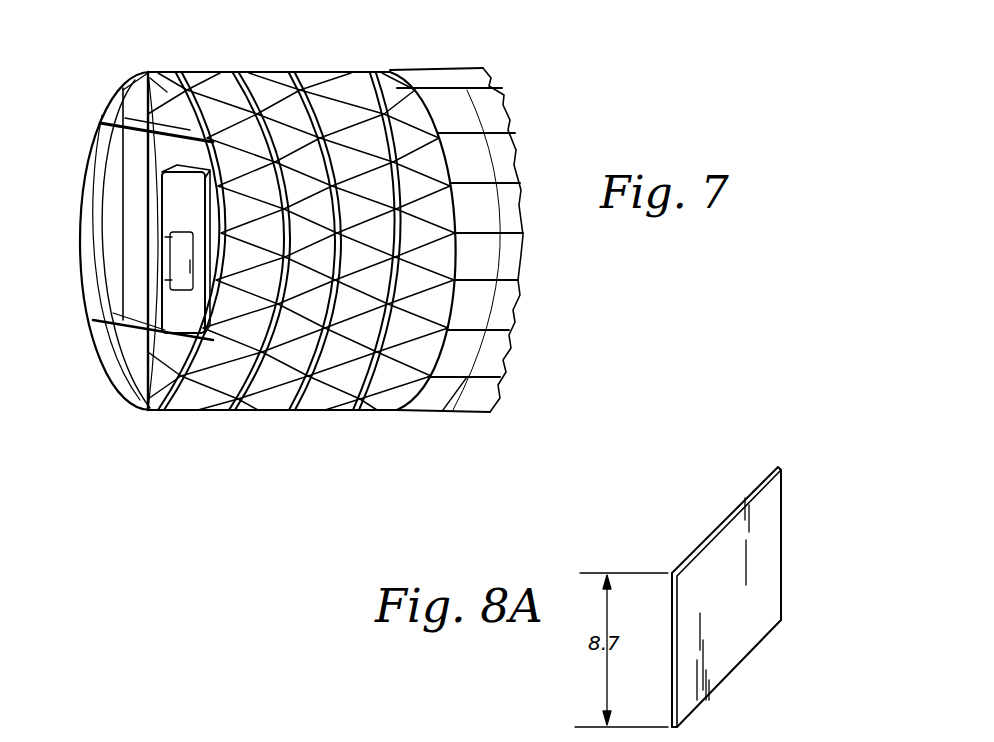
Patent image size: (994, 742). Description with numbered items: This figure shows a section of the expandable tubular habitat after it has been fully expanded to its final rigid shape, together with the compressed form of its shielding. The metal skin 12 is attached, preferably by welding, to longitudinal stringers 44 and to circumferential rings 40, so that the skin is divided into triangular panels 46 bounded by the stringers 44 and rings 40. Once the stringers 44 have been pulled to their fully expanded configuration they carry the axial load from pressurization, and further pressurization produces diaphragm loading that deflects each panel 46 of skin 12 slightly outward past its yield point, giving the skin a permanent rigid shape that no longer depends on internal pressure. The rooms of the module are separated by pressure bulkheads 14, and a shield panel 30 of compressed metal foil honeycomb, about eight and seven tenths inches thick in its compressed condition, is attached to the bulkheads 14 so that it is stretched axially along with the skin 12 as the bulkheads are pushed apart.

In FIG. 7, the metal skin 12 is at (333, 375).
In FIG. 7, the pressure bulkhead 14 is at (103, 150).
In FIG. 7, the shield panel 30 is at (465, 118).
In FIG. 8A, the shield panel 30 is at (760, 565).
In FIG. 7, the ring 40 is at (258, 100).
In FIG. 7, the stringer 44 is at (210, 100).
In FIG. 7, the panel 46 is at (328, 113).